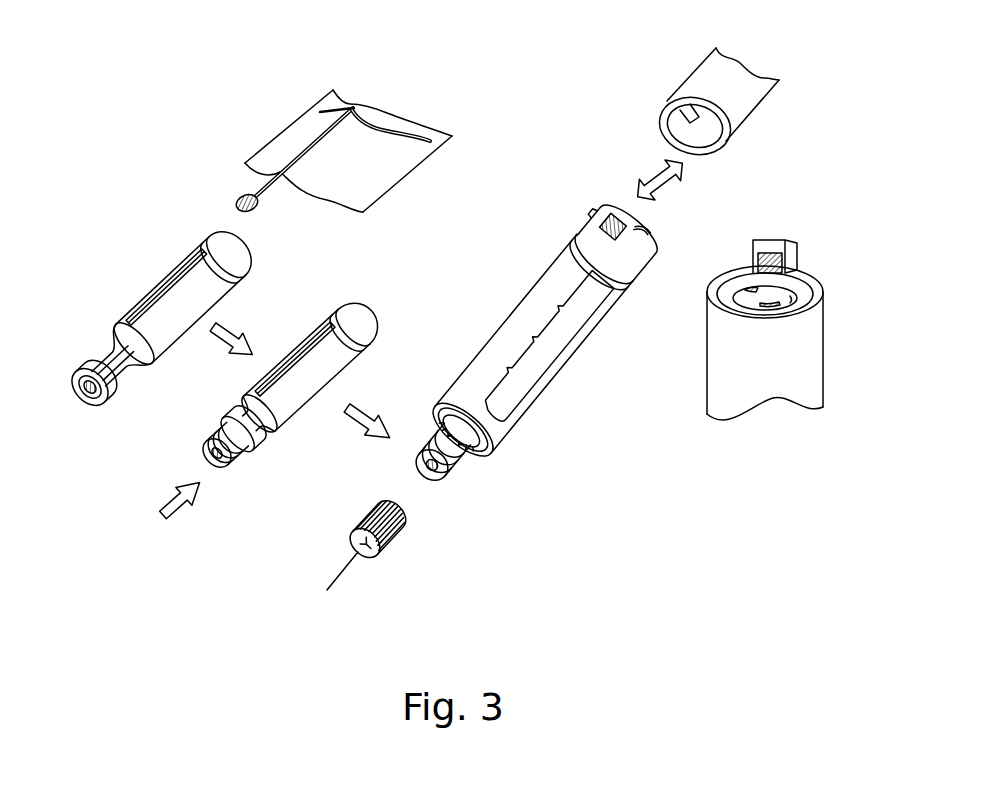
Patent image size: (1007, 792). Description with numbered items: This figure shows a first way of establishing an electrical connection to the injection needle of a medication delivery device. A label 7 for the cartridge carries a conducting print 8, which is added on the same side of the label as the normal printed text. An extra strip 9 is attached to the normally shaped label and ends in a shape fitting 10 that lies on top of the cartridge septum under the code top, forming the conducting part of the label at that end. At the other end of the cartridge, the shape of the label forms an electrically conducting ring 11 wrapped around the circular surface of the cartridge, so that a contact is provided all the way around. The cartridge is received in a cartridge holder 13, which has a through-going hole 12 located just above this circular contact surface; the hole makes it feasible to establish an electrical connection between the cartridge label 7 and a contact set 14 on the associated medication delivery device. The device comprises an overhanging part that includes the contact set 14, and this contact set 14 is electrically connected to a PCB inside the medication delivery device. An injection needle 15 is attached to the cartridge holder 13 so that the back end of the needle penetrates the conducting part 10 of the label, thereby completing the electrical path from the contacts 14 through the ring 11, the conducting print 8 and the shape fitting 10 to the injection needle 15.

The label 7 is at (380, 175).
The conducting print 8 is at (388, 117).
The extra strip 9 is at (255, 187).
The shape fitting 10 is at (86, 405).
The electrically conducting ring 11 is at (353, 302).
The through-going hole 12 is at (617, 223).
The cartridge holder 13 is at (527, 327).
The contact set 14 is at (775, 253).
The injection needle 15 is at (393, 535).